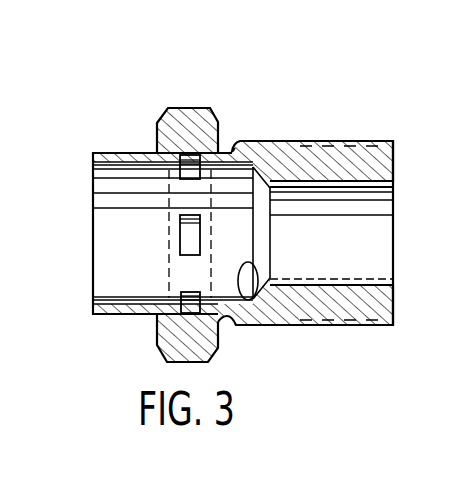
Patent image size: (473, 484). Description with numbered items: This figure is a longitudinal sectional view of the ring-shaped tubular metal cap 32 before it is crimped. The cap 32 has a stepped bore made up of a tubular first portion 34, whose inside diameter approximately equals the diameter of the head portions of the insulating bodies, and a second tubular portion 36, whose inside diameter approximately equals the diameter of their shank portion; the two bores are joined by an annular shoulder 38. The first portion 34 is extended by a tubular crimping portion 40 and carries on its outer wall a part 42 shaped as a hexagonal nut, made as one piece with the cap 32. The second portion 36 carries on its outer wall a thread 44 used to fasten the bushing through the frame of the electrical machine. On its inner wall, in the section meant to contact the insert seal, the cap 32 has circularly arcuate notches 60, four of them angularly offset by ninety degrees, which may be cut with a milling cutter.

The cap 32 is at (285, 110).
The first portion 34 is at (237, 146).
The second tubular portion 36 is at (348, 141).
The annular shoulder 38 is at (249, 300).
The crimping portion 40 is at (114, 153).
The hexagonal nut part 42 is at (184, 108).
The thread 44 is at (378, 141).
The circularly arcuate notch 60 is at (185, 233).